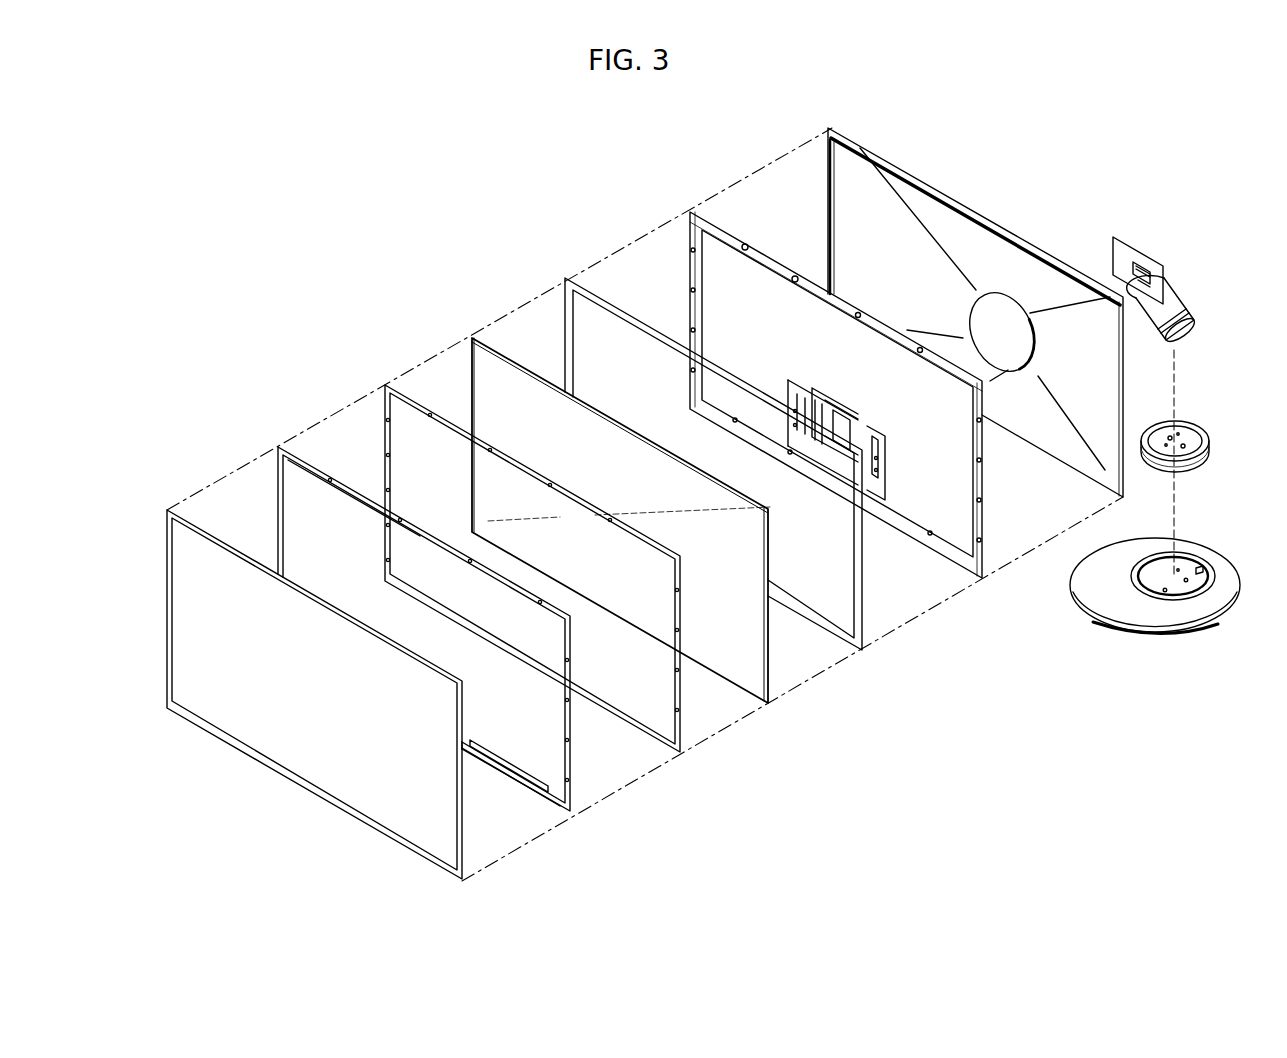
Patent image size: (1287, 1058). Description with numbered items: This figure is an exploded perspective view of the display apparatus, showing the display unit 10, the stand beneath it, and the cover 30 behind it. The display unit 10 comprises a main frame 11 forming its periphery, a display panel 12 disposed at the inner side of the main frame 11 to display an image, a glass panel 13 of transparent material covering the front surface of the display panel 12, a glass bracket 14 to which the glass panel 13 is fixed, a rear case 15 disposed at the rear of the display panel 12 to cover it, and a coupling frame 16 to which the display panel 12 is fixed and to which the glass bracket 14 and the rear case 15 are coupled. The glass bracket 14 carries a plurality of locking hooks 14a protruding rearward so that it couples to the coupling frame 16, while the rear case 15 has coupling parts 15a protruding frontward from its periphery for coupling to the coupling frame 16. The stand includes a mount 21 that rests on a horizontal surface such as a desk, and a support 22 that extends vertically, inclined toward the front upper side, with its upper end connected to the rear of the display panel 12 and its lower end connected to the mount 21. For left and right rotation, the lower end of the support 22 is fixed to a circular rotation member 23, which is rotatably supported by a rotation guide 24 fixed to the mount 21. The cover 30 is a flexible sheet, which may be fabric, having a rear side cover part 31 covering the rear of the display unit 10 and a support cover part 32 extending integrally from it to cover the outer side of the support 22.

The display unit 10 is at (396, 240).
The main frame 11 is at (557, 270).
The display panel 12 is at (462, 331).
The glass panel 13 is at (166, 502).
The glass bracket 14 is at (272, 440).
The locking hooks 14a is at (299, 465).
The rear case 15 is at (683, 206).
The coupling parts 15a is at (793, 284).
The coupling frame 16 is at (378, 378).
The mount 21 is at (1220, 576).
The support 22 is at (1180, 302).
The rotation member 23 is at (1193, 423).
The rotation guide 24 is at (1205, 456).
The cover 30 is at (948, 172).
The rear side cover part 31 is at (845, 221).
The support cover part 32 is at (1013, 316).